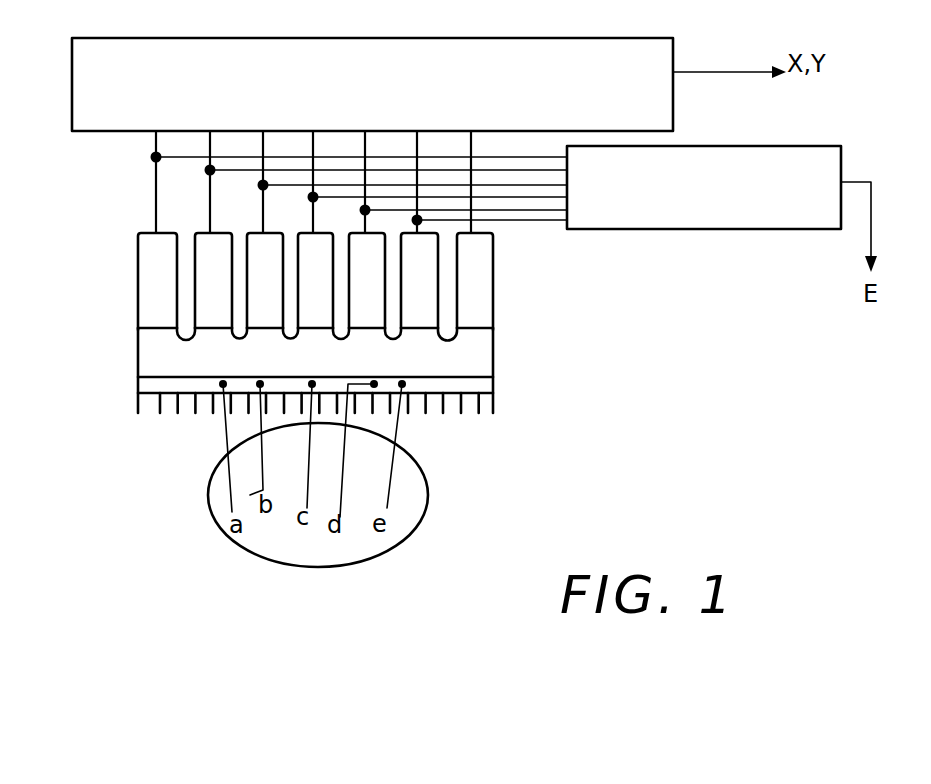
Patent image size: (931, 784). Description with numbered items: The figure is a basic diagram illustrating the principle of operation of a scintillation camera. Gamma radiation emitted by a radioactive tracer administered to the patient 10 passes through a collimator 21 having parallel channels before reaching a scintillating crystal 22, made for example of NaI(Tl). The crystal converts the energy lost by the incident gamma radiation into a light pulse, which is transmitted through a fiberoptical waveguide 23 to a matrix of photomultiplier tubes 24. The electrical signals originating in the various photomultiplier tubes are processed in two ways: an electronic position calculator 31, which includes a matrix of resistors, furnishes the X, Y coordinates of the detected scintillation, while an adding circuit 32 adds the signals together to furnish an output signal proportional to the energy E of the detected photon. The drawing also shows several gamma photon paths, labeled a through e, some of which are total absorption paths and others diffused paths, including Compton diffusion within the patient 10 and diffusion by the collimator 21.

The patient 10 is at (429, 503).
The collimator 21 is at (493, 405).
The scintillating crystal 22 is at (493, 385).
The fiberoptical waveguide 23 is at (138, 357).
The matrix of photomultiplier tubes 24 is at (138, 278).
The electronic position calculator 31 is at (72, 88).
The adding circuit 32 is at (650, 229).